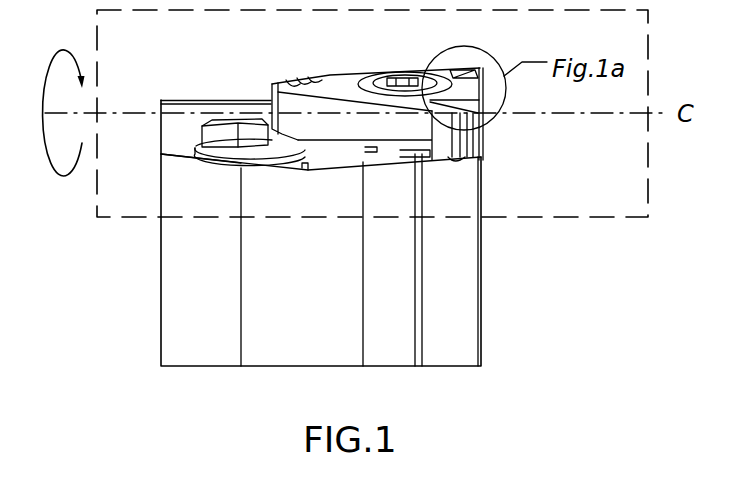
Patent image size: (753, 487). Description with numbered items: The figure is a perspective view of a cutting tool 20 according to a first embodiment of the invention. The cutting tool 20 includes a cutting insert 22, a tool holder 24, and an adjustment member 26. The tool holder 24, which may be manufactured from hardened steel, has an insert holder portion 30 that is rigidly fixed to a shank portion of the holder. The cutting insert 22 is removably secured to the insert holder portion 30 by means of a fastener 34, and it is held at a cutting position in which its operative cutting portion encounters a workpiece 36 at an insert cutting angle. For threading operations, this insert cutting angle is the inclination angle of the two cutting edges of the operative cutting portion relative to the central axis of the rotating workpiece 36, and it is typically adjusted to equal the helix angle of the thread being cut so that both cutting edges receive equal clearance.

The cutting tool 20 is at (137, 288).
The cutting insert 22 is at (347, 78).
The tool holder 24 is at (197, 313).
The adjustment member 26 is at (217, 132).
The insert holder portion 30 is at (200, 192).
The fastener 34 is at (407, 72).
The workpiece 36 is at (518, 178).